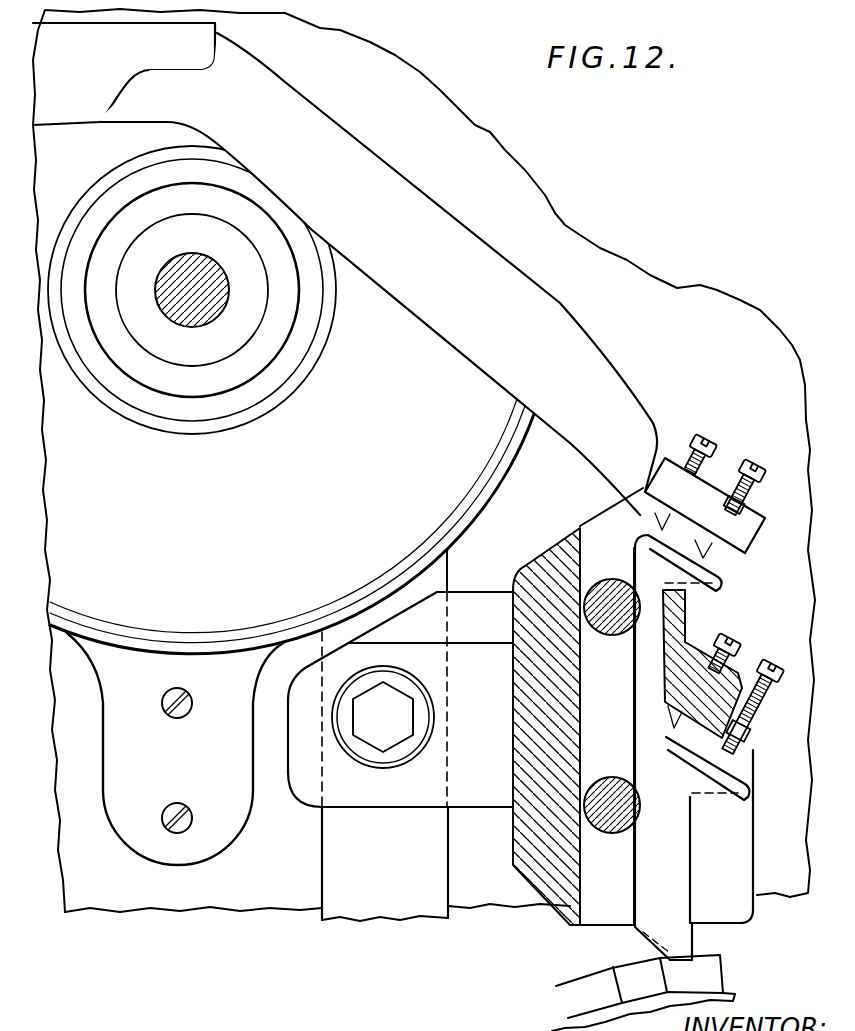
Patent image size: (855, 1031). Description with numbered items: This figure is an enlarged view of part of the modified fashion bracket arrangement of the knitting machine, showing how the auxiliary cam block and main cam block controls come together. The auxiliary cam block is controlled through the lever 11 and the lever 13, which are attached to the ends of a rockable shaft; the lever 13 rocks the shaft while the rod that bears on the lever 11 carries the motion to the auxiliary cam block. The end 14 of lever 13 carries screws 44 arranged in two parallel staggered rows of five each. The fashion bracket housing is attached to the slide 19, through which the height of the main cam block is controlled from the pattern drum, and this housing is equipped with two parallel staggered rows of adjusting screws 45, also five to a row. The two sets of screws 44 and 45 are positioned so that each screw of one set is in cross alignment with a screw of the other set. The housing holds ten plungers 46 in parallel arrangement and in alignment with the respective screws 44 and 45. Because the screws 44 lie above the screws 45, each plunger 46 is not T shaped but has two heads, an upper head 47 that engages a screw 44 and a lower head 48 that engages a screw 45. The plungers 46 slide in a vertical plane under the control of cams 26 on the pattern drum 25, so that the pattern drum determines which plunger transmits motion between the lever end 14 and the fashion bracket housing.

The lever 11 is at (124, 74).
The lever 13 is at (378, 274).
The end of lever 14 is at (658, 470).
The slide 19 is at (400, 735).
The pattern drum 25 is at (578, 1022).
The cams 26 is at (628, 968).
The screws 44 is at (713, 447).
The adjusting screws 45 is at (768, 658).
The plungers 46 is at (678, 747).
The head 47 is at (718, 583).
The head 48 is at (725, 783).